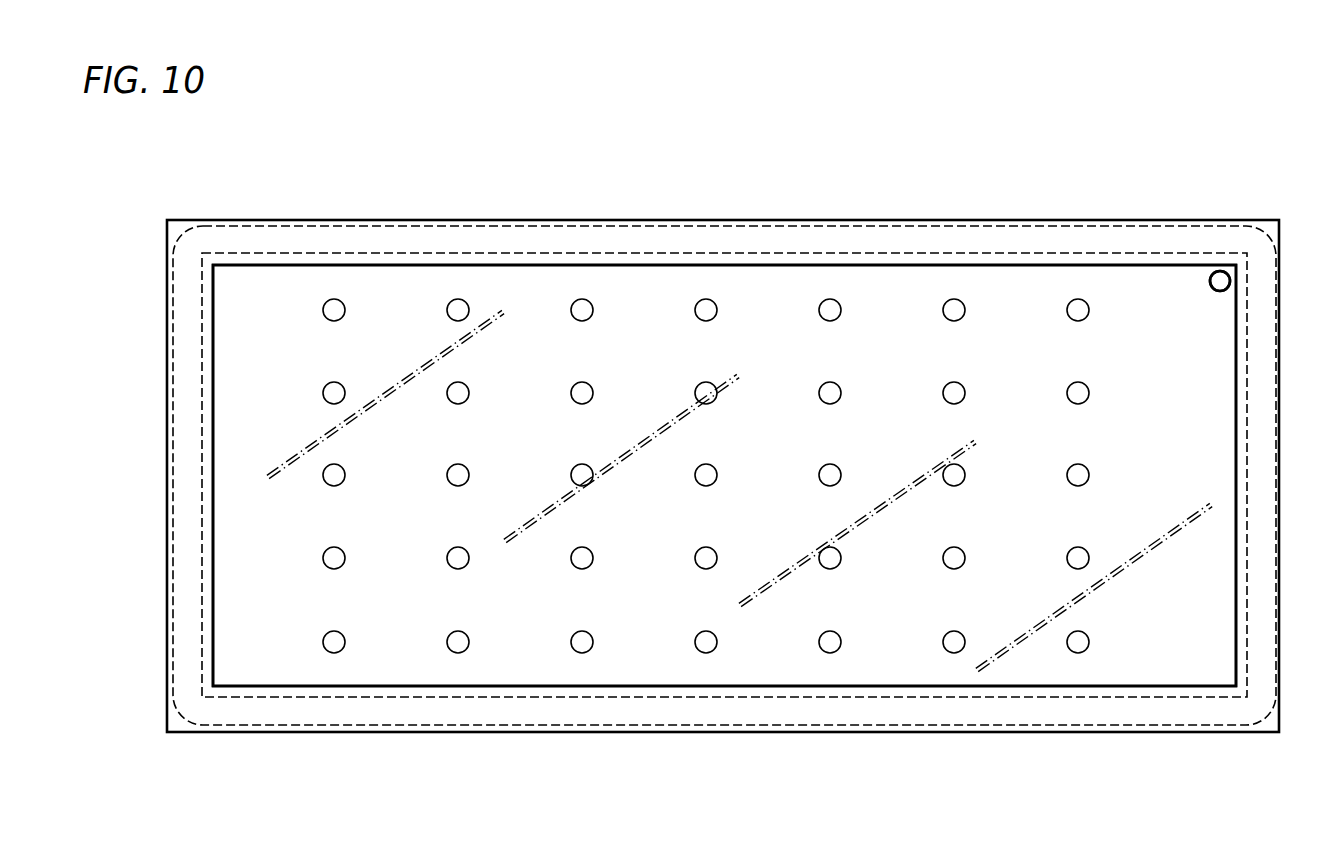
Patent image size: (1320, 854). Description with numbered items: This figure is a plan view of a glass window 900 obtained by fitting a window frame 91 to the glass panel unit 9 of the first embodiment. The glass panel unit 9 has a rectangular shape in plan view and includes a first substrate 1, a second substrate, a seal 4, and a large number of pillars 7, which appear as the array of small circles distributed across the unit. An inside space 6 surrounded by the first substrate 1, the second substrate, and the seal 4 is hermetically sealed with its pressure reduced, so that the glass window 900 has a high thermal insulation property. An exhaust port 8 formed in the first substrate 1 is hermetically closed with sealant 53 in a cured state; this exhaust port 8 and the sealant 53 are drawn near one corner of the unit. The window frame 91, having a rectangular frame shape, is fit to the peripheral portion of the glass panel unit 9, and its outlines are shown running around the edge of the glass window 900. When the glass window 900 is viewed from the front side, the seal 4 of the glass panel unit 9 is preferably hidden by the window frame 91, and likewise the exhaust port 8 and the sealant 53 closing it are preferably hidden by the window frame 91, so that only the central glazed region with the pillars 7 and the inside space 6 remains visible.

The glass window 900 is at (1249, 215).
The seal 4 is at (1263, 453).
The window frame 91 is at (752, 240).
The first substrate 1 is at (885, 313).
The inside space 6 is at (652, 305).
The glass panel unit 9 is at (1005, 315).
The pillars 7 is at (950, 561).
The exhaust port 8 is at (1209, 282).
The sealant 53 is at (1222, 292).